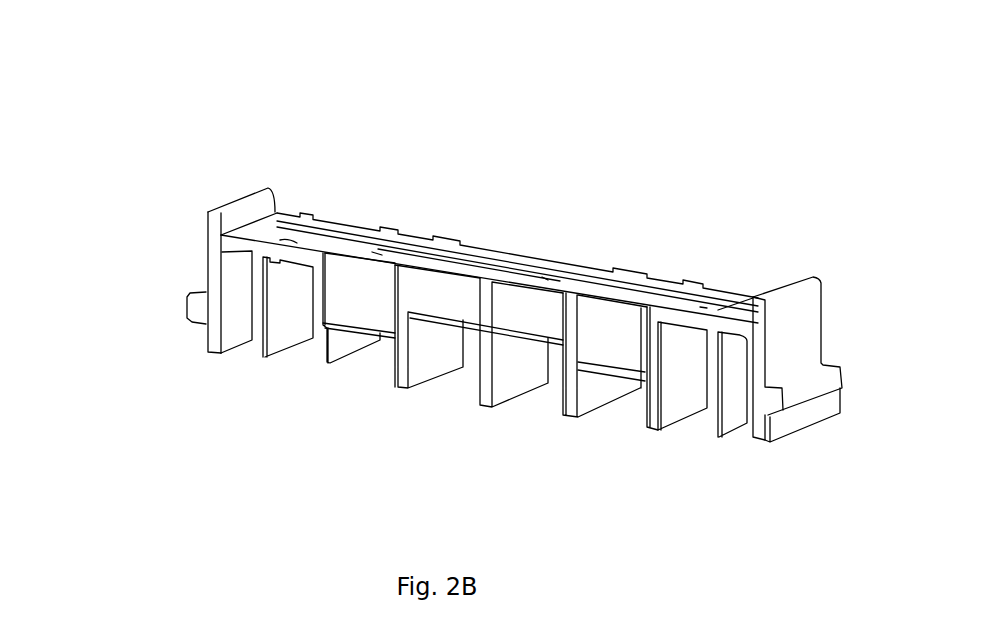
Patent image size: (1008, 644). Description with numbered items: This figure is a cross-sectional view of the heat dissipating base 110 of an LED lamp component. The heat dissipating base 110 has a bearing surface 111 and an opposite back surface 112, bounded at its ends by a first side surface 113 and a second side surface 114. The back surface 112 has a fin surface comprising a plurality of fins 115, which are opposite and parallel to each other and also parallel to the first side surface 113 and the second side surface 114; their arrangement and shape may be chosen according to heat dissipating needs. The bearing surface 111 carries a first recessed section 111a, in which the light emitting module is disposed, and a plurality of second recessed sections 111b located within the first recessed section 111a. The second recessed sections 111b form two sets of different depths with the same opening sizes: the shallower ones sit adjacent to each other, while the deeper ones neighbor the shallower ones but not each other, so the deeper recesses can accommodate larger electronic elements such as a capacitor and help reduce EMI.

The heat dissipating base 110 is at (95, 149).
The bearing surface 111 is at (343, 228).
The first recessed section 111a is at (273, 228).
The second recessed sections 111b is at (600, 322).
The back surface 112 is at (690, 356).
The first side surface 113 is at (203, 230).
The second side surface 114 is at (808, 313).
The fins 115 is at (322, 357).